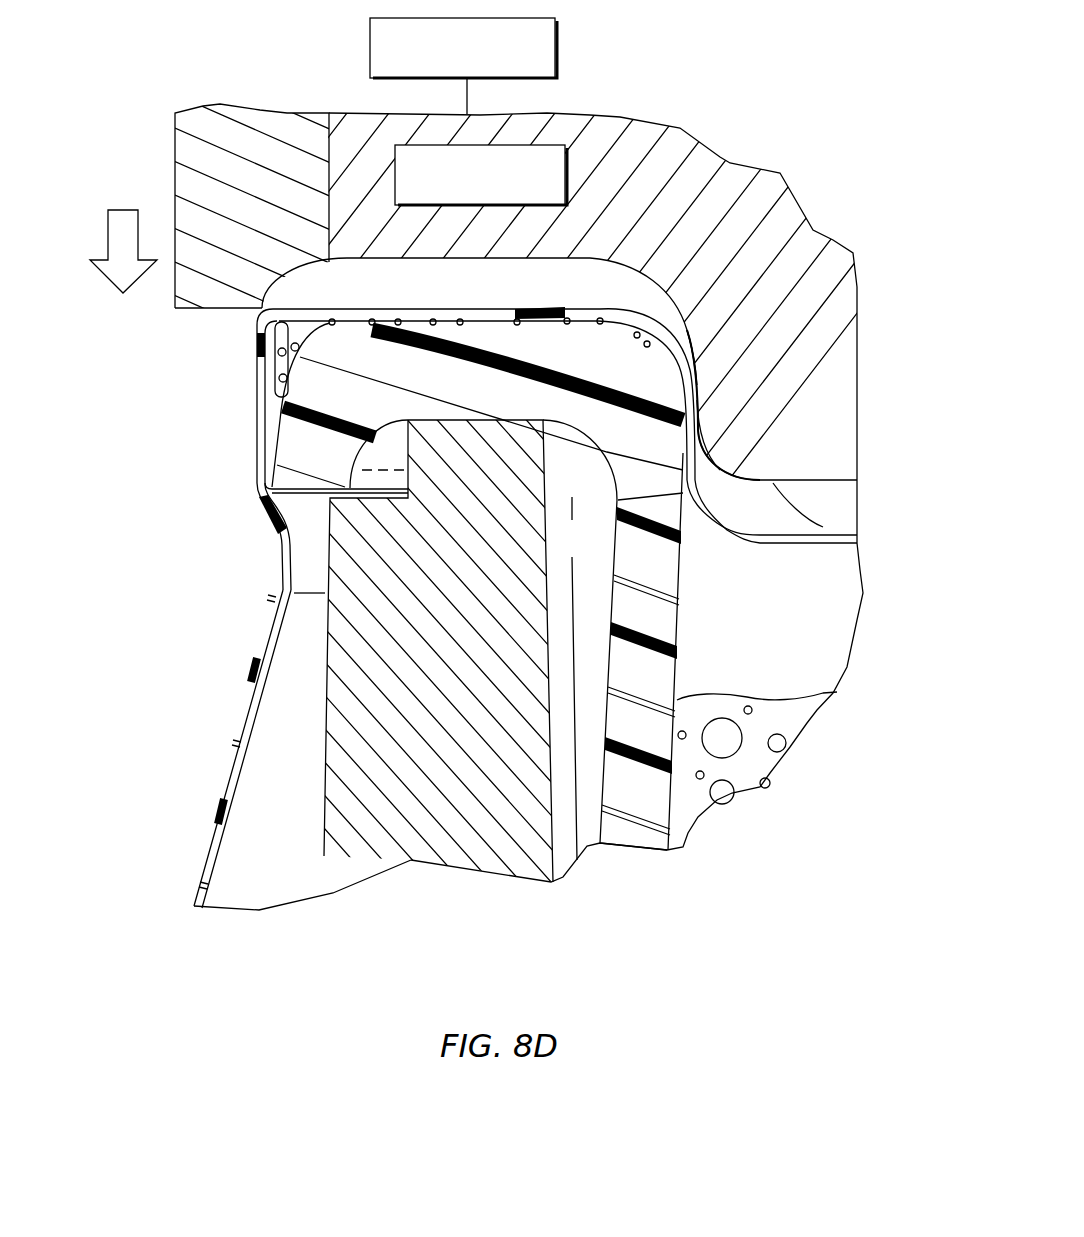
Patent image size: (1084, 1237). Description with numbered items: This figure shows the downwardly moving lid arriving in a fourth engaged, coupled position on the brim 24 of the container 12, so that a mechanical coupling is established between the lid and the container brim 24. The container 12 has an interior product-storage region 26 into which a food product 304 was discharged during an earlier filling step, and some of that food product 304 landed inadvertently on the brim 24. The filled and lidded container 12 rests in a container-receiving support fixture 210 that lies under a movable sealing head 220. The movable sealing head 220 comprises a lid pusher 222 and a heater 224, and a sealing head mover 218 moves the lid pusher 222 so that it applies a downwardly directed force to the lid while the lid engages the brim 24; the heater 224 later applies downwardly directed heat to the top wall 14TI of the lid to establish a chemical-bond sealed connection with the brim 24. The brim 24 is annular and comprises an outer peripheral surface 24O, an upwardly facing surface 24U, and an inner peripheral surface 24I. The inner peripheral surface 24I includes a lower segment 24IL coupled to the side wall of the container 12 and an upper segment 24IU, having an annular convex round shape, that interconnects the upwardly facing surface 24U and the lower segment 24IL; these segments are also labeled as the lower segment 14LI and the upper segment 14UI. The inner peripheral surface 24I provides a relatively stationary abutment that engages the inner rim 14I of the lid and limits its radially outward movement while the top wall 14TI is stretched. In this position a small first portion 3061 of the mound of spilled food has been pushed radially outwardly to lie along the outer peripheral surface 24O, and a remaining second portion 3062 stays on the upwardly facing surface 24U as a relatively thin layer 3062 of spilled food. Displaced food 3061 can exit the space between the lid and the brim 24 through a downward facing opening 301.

The container 12 is at (681, 679).
The inner rim 14I is at (810, 413).
The upper segment 14UI is at (680, 352).
The lower segment 14LI is at (703, 450).
The top wall 14TI is at (442, 352).
The brim 24 is at (469, 427).
The upwardly facing surface 24U is at (478, 325).
The outer peripheral surface 24O is at (273, 440).
The inner peripheral surface 24I is at (702, 398).
The upper segment 24IU is at (697, 340).
The lower segment 24IL is at (585, 678).
The interior product-storage region 26 is at (830, 591).
The container-receiving support fixture 210 is at (326, 825).
The sealing head mover 218 is at (560, 50).
The movable sealing head 220 is at (171, 145).
The lid pusher 222 is at (280, 132).
The heater 224 is at (588, 150).
The downward facing opening 301 is at (284, 498).
The food product 304 is at (800, 710).
The small first portion of mound of spilled food 3061 is at (280, 368).
The remaining second portion of mound of spilled food 3062 is at (413, 320).